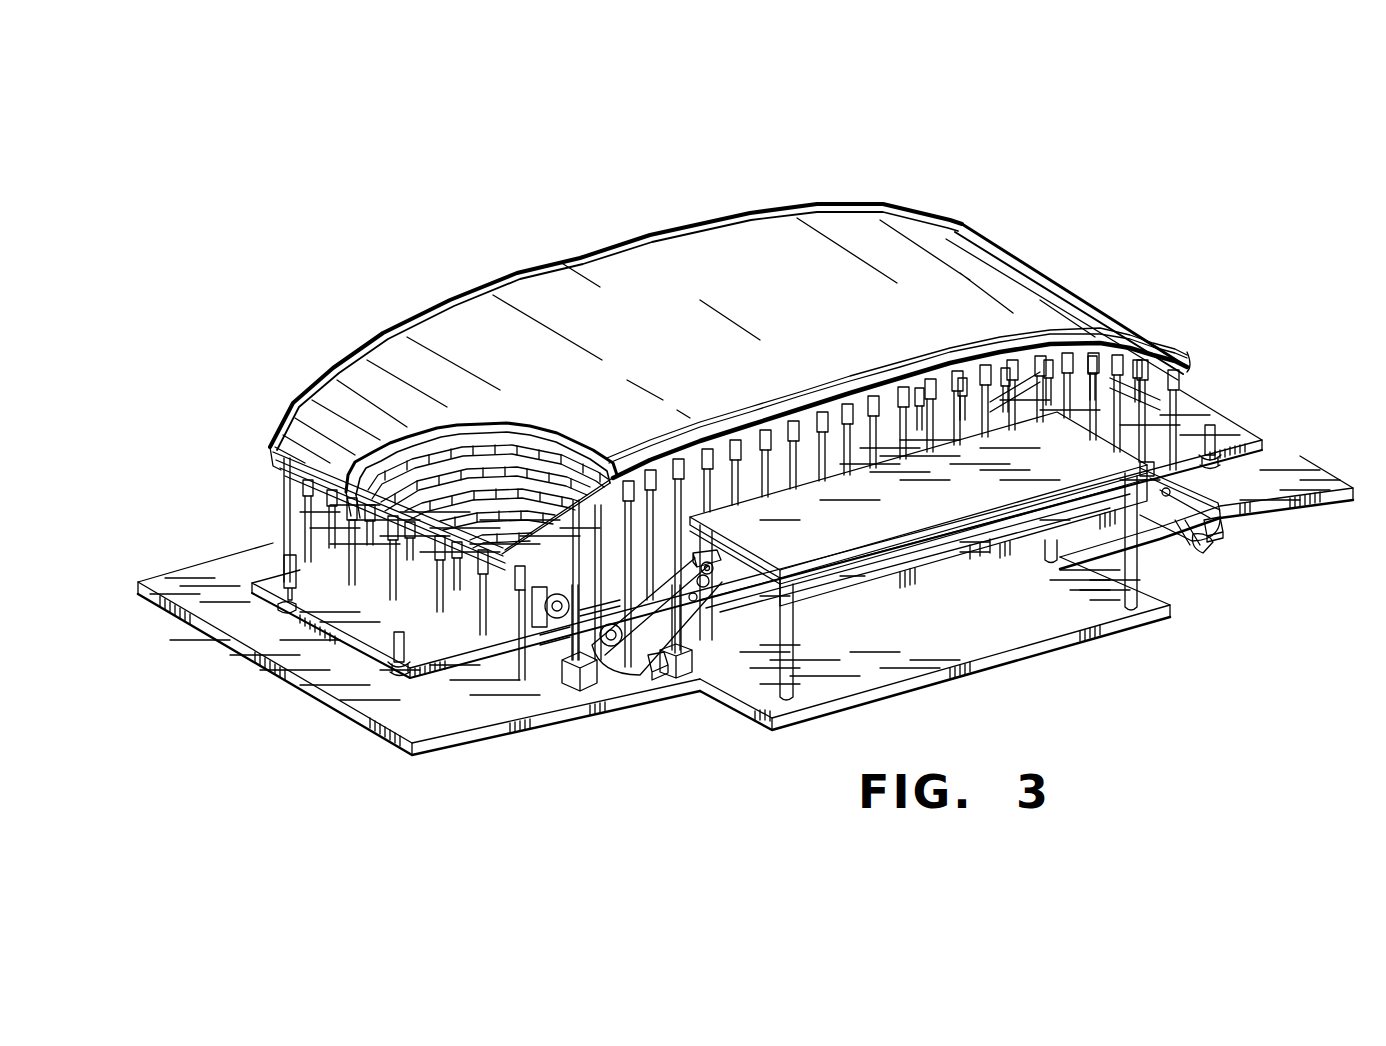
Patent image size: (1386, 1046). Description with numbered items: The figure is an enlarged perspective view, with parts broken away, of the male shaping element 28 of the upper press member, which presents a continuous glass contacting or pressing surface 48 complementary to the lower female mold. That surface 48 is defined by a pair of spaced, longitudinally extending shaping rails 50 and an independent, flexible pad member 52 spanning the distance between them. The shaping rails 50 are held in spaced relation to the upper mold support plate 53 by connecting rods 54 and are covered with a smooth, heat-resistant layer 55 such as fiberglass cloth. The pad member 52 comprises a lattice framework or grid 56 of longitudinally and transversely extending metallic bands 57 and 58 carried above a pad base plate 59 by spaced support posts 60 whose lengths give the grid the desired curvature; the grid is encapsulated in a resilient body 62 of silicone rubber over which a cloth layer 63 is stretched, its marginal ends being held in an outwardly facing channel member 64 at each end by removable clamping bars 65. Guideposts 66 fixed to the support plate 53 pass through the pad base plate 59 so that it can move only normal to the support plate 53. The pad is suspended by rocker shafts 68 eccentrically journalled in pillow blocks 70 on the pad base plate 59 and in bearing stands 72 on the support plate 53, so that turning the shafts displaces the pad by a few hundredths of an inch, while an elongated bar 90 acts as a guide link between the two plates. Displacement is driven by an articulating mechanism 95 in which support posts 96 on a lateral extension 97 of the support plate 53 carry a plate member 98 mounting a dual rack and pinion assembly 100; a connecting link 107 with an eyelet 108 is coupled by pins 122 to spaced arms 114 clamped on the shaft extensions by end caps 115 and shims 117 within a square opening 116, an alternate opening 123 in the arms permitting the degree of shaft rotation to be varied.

The male shaping element 28 is at (255, 513).
The glass contacting or pressing surface 48 is at (998, 280).
The shaping rails 50 is at (648, 233).
The pad member 52 is at (1080, 292).
The upper mold support plate 53 is at (1325, 478).
The connecting rods 54 is at (1172, 410).
The layer 55 is at (668, 448).
The lattice framework or grid 56 is at (412, 458).
The longitudinally extending metallic bands 57 is at (548, 452).
The transversely extending metallic bands 58 is at (457, 476).
The pad base plate 59 is at (1235, 447).
The support posts 60 is at (368, 548).
The encapsulating body 62 is at (565, 440).
The layer 63 is at (425, 438).
The channel member 64 is at (481, 580).
The clamping bars 65 is at (284, 498).
The guideposts 66 is at (1214, 424).
The rocker shafts 68 is at (666, 680).
The pillow blocks 70 is at (550, 632).
The bearing stands 72 is at (595, 692).
The elongated bar 90 is at (893, 555).
The articulating mechanism 95 is at (1160, 585).
The support posts 96 is at (783, 690).
The lateral extension 97 is at (1010, 656).
The plate member 98 is at (854, 555).
The dual rack and pinion assembly 100 is at (918, 578).
The connecting link 107 is at (738, 566).
The eyelet 108 is at (700, 560).
The arms 114 is at (637, 674).
The end caps 115 is at (1217, 548).
The square opening 116 is at (1193, 550).
The shims 117 is at (655, 686).
The pins 122 is at (742, 578).
The alternate opening 123 is at (693, 603).